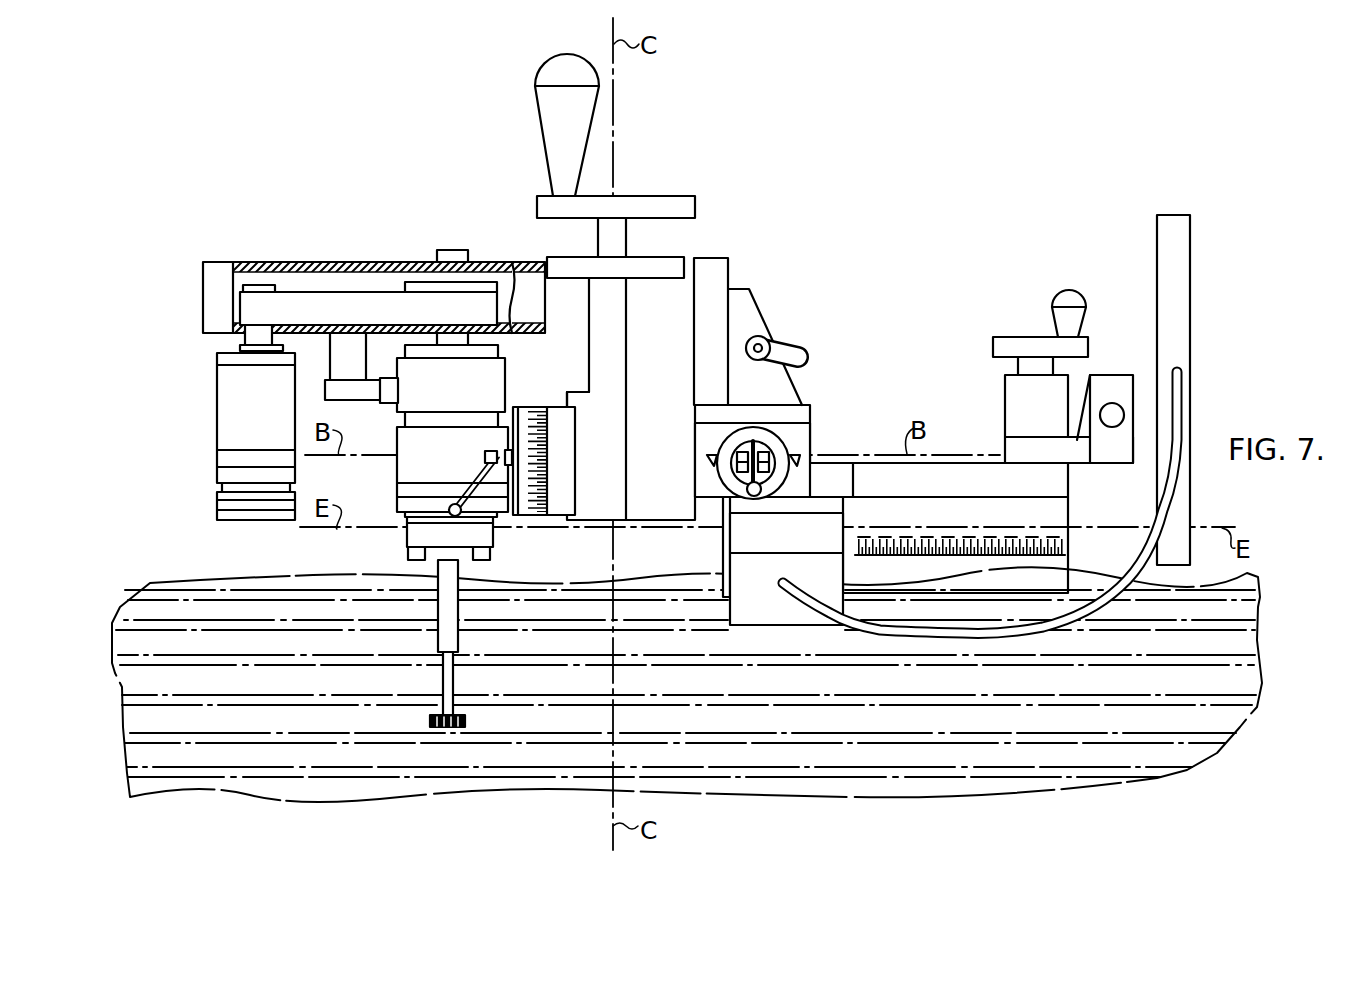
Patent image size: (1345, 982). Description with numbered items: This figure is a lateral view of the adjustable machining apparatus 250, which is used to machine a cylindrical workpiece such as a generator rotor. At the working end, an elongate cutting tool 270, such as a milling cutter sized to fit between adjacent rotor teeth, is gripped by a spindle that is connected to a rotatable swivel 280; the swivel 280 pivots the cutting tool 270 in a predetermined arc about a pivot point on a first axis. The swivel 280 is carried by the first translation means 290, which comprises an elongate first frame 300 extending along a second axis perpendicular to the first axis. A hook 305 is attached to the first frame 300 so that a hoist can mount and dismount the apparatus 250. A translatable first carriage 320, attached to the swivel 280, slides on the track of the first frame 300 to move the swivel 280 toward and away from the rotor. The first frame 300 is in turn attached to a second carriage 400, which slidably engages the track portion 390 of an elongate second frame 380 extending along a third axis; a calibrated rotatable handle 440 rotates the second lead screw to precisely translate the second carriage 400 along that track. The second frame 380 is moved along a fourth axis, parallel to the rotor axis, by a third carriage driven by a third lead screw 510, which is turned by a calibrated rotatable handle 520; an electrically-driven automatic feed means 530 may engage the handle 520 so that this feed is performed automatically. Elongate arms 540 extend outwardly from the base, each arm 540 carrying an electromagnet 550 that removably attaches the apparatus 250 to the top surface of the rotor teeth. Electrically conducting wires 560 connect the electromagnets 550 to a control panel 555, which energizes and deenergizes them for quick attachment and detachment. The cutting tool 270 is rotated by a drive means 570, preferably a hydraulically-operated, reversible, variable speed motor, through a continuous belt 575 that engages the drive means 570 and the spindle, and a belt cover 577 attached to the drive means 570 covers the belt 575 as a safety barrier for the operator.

The machining apparatus 250 is at (668, 165).
The cutting tool 270 is at (453, 677).
The swivel 280 is at (547, 495).
The first translation means 290 is at (708, 213).
The first frame 300 is at (678, 312).
The hook 305 is at (790, 350).
The first carriage 320 is at (582, 398).
The second frame 380 is at (552, 128).
The track portion 390 is at (802, 440).
The second carriage 400 is at (803, 452).
The calibrated rotatable handle 440 is at (735, 475).
The third lead screw 510 is at (958, 535).
The calibrated rotatable handle 520 is at (1075, 317).
The automatic feed means 530 is at (1005, 397).
The arm 540 is at (748, 523).
The electromagnet 550 is at (762, 610).
The control panel 555 is at (1183, 245).
The electrically conducting wires 560 is at (1097, 592).
The drive means 570 is at (217, 478).
The continuous belt 575 is at (340, 307).
The belt cover 577 is at (522, 273).